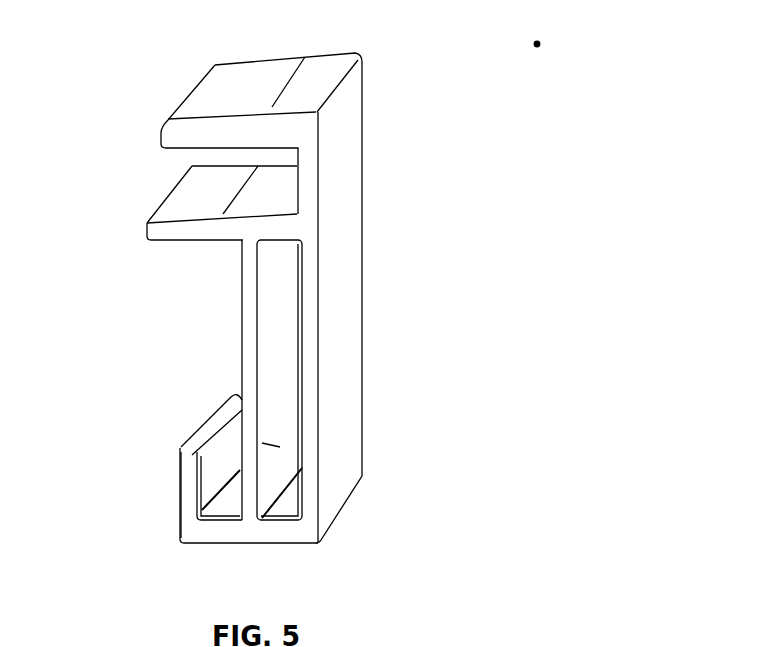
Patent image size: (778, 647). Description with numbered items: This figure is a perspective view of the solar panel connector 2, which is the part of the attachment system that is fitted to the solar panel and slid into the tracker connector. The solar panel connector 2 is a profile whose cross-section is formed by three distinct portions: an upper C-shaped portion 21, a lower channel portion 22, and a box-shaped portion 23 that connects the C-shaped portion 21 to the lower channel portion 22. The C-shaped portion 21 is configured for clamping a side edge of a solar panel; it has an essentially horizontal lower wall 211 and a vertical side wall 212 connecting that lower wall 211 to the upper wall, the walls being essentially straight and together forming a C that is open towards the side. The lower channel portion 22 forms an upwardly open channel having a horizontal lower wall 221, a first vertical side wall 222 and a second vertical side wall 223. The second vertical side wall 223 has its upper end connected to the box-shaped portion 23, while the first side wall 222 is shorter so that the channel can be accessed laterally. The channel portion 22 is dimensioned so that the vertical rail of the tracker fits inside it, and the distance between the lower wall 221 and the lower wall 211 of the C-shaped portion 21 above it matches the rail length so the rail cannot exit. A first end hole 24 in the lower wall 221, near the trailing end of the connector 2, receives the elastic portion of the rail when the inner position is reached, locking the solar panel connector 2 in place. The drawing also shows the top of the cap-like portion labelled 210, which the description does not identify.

The solar panel connector 2 is at (537, 44).
The upper C-shaped portion 21 is at (118, 175).
The top cap 210 is at (302, 78).
The lower wall 211 is at (188, 217).
The vertical side wall 212 is at (333, 157).
The lower channel portion 22 is at (130, 510).
The horizontal lower wall 221 is at (183, 478).
The first vertical side wall 222 is at (213, 450).
The second vertical side wall 223 is at (262, 443).
The box-shaped portion 23 is at (193, 322).
The first end hole 24 is at (222, 522).